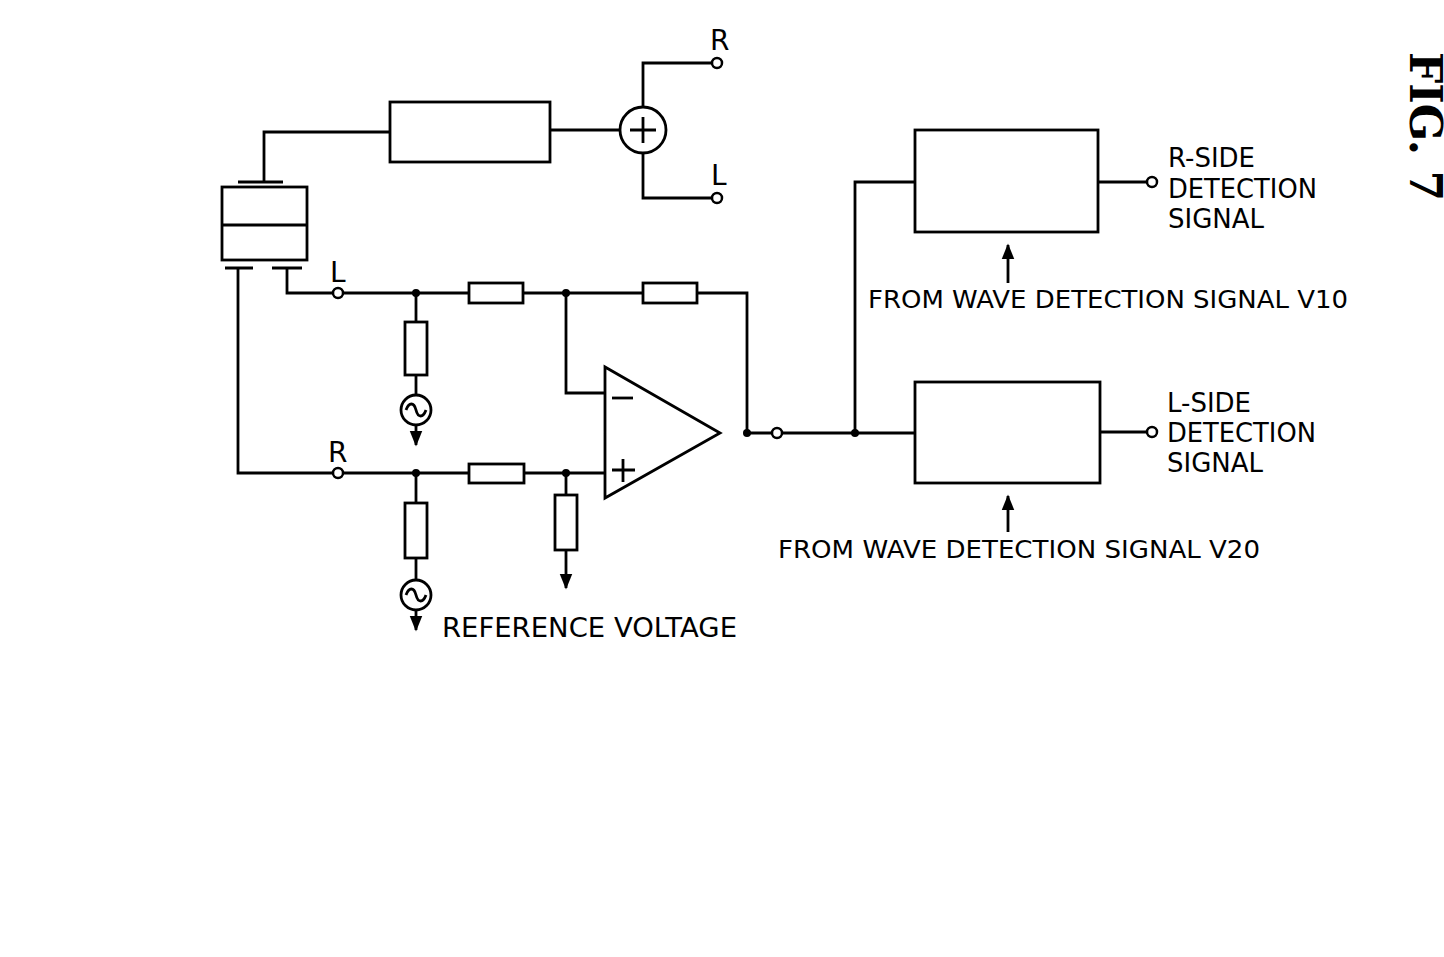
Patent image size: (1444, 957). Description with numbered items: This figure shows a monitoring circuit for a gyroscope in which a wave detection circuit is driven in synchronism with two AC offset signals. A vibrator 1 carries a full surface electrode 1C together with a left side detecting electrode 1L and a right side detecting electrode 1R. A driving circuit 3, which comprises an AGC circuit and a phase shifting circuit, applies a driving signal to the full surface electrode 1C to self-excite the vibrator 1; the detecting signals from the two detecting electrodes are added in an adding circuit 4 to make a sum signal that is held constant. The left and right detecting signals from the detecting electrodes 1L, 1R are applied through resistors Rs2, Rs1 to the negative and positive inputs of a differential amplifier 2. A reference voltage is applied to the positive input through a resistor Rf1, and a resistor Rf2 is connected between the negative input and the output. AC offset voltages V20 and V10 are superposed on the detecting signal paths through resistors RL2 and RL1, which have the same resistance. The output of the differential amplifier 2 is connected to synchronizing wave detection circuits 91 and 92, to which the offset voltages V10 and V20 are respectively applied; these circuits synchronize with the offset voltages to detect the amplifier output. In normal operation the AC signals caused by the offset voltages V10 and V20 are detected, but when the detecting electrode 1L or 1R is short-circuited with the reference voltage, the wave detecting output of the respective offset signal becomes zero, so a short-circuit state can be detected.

The vibrator 1 is at (318, 214).
The full surface electrode 1C is at (252, 180).
The right side detecting electrode 1R is at (228, 270).
The left side detecting electrode 1L is at (280, 270).
The differential amplifier 2 is at (657, 413).
The driving circuit 3 is at (468, 102).
The adding circuit 4 is at (667, 130).
The synchronizing wave detection circuit 91 is at (1087, 130).
The synchronizing wave detection circuit 92 is at (1087, 382).
The resistor Rs1 is at (496, 492).
The resistor Rs2 is at (496, 277).
The resistor Rf1 is at (591, 522).
The resistor Rf2 is at (670, 277).
The resistor RL1 is at (387, 530).
The resistor RL2 is at (387, 348).
The AC offset voltage V10 is at (387, 597).
The AC offset voltage V20 is at (447, 412).